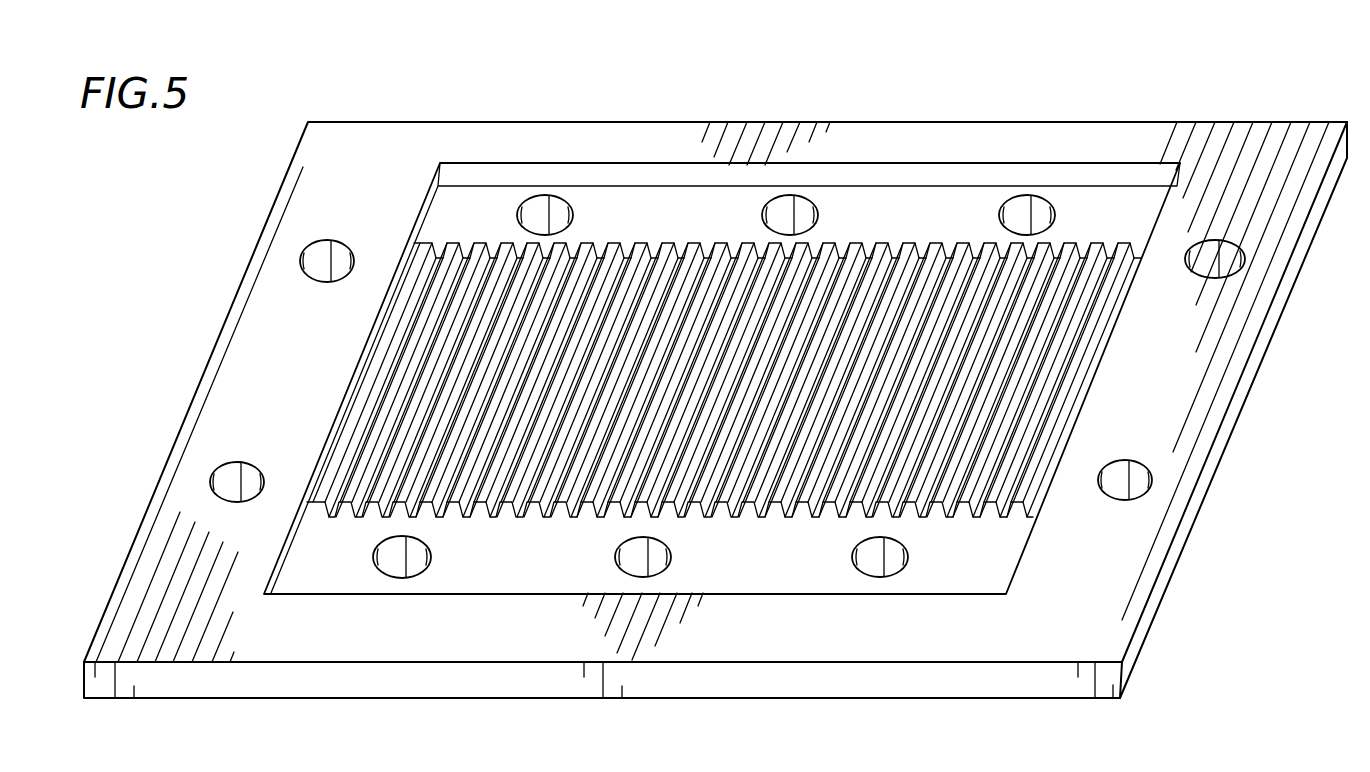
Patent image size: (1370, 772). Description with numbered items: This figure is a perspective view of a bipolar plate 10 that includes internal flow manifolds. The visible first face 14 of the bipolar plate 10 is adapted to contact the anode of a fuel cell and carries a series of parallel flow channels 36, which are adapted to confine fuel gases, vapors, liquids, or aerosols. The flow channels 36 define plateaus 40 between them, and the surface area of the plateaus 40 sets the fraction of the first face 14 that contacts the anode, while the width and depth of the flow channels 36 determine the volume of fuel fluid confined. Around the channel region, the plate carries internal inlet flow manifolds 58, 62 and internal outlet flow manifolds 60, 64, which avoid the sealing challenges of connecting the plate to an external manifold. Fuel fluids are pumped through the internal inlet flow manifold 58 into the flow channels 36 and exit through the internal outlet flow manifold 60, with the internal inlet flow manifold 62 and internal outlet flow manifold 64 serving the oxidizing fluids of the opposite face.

The bipolar plate 10 is at (1008, 93).
The first face 14 is at (955, 243).
The flow channel 36 is at (879, 232).
The plateaus 40 is at (632, 243).
The internal inlet flow manifold 58 is at (775, 200).
The internal outlet flow manifold 60 is at (644, 560).
The internal inlet flow manifold 62 is at (312, 256).
The internal outlet flow manifold 64 is at (1135, 477).